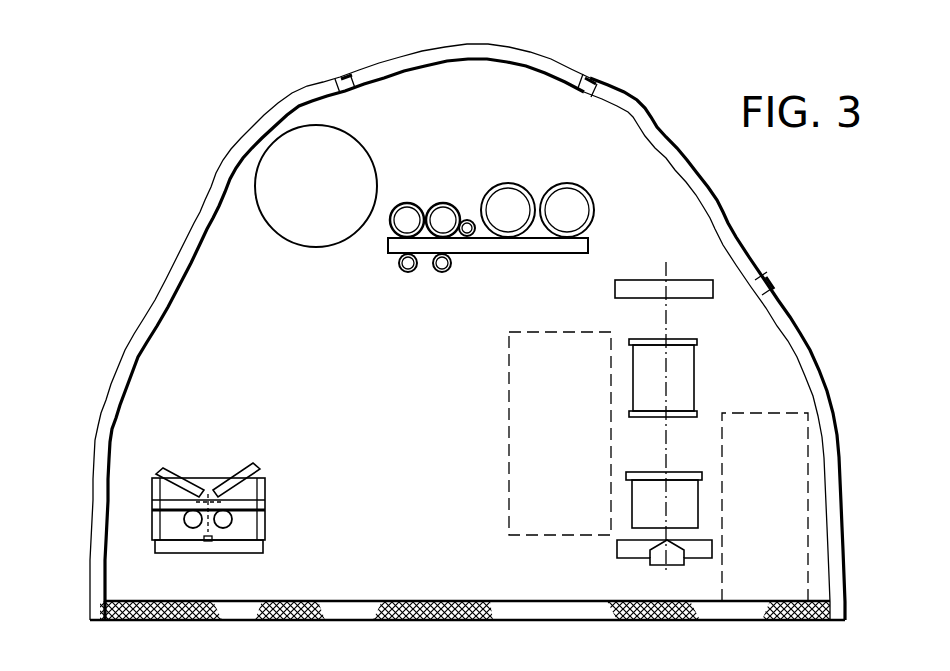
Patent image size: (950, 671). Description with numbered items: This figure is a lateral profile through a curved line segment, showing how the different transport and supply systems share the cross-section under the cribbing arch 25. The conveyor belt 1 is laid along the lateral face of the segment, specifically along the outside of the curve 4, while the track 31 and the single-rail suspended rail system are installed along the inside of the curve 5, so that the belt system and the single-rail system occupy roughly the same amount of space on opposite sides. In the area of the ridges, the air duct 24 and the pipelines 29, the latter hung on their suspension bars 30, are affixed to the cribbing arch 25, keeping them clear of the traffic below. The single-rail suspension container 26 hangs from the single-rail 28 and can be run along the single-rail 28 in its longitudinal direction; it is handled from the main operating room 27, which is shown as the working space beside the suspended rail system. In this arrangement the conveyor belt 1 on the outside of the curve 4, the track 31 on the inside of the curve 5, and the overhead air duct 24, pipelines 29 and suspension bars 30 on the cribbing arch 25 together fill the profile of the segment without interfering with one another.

The conveyor belt 1 is at (275, 509).
The outside of the curve 4 is at (122, 518).
The inside of the curve 5 is at (793, 430).
The air duct 24 is at (340, 192).
The cribbing arch 25 is at (503, 58).
The single-rail suspension container 26 is at (640, 505).
The main operating room 27 is at (540, 497).
The single-rail 28 is at (665, 292).
The pipelines 29 is at (509, 207).
The suspension bars 30 is at (578, 247).
The track 31 is at (793, 558).